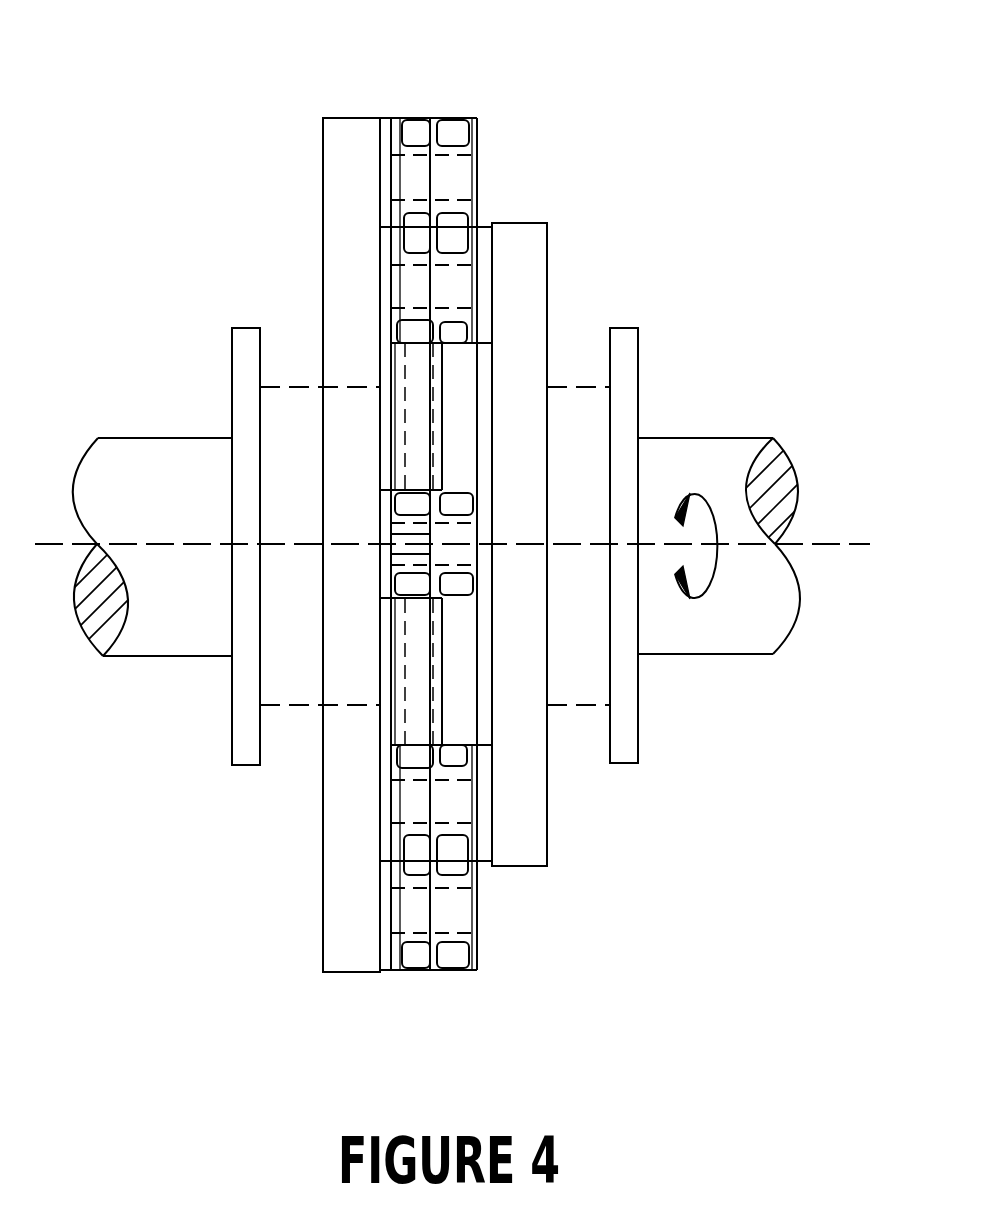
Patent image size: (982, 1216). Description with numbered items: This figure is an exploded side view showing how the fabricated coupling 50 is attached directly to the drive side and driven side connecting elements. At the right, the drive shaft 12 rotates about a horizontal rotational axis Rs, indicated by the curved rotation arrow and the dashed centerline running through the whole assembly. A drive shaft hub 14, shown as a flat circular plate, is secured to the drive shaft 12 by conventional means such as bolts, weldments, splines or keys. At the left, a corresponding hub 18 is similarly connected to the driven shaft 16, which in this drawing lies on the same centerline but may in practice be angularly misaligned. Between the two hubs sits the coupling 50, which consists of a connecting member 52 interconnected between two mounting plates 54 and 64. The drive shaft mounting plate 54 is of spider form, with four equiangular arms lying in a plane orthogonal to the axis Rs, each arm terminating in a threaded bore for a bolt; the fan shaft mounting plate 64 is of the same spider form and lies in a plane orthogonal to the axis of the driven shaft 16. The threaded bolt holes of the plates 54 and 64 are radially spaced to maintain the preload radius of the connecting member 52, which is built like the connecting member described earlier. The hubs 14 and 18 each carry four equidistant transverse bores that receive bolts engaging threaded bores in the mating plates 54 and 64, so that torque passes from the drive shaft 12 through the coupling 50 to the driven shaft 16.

The drive shaft 12 is at (745, 610).
The drive shaft hub 14 is at (622, 348).
The driven shaft 16 is at (173, 610).
The driven shaft hub 18 is at (250, 357).
The fabricated coupling 50 is at (260, 817).
The connecting member 52 is at (435, 117).
The drive shaft mounting plate 54 is at (527, 268).
The fan shaft mounting plate 64 is at (362, 172).
The rotational axis of the drive shaft Rs is at (825, 544).